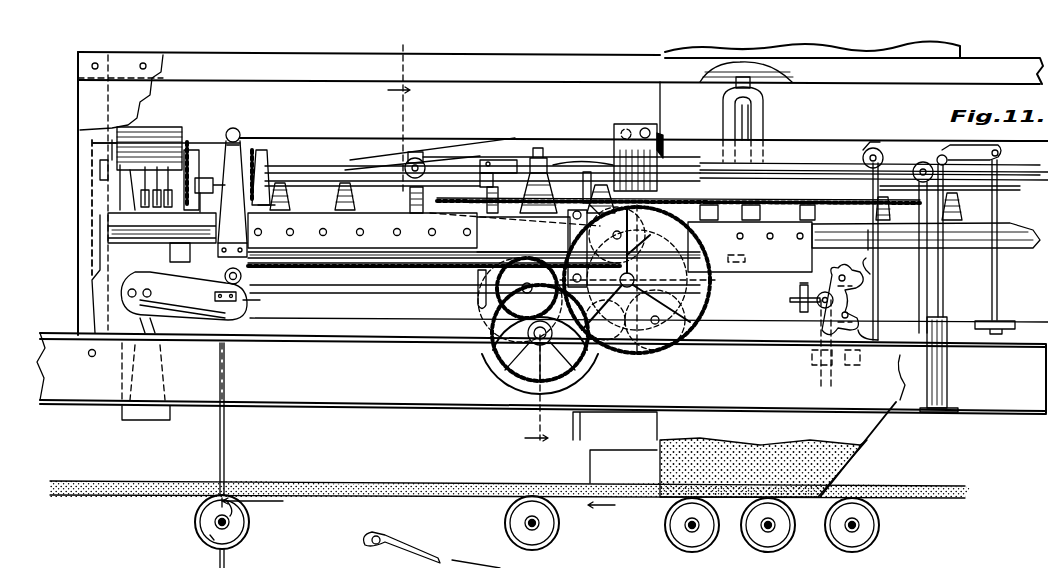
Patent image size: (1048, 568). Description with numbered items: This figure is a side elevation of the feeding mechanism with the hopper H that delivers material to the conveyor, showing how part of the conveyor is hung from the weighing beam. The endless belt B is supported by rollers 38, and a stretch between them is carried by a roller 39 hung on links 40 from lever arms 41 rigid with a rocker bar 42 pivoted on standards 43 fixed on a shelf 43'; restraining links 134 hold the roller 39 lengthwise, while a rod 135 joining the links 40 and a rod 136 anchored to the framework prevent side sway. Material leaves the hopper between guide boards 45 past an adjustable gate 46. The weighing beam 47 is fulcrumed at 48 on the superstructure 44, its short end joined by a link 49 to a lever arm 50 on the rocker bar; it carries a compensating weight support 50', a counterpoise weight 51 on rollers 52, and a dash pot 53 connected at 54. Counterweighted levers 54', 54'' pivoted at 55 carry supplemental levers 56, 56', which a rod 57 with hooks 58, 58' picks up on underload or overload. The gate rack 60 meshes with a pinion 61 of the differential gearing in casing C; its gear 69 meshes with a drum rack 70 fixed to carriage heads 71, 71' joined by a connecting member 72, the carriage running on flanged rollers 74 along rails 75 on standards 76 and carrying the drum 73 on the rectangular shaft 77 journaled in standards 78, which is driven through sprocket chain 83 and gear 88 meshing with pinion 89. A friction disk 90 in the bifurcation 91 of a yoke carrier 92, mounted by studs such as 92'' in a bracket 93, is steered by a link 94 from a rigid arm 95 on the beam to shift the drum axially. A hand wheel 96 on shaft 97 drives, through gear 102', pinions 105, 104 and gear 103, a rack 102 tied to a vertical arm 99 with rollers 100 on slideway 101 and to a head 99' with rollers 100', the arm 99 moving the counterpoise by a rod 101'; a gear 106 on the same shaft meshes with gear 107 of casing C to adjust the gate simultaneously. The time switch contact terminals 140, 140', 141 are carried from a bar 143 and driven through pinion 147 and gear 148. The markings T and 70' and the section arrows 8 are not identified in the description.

The table frame T is at (115, 141).
The contact terminal 141 is at (150, 130).
The gear 148 is at (194, 163).
The contact terminal 140 is at (182, 157).
The contact terminal 140' is at (161, 151).
The bar 143 is at (165, 222).
The pinion 147 is at (185, 225).
The vertical arm 99 is at (188, 226).
The flanged rollers 100 is at (235, 254).
The pinion 89 is at (248, 153).
The gear 88 is at (262, 180).
The standards 78 is at (262, 172).
The shaft 77 is at (340, 166).
The rails 75 is at (363, 180).
The drum 73 is at (448, 150).
The rod 101' is at (559, 134).
The carriage head 71 is at (397, 137).
The flanged rollers 74 is at (405, 162).
The connecting member 72 is at (485, 165).
The fulcrum 48 is at (538, 148).
The weighing beam 47 is at (592, 140).
The rollers 100' is at (500, 176).
The rollers 52 is at (645, 128).
The counterpoise weight 51 is at (664, 142).
The bracket 93 is at (725, 122).
The yoke shaped carrier 92 is at (765, 112).
The bifurcation 91 is at (762, 103).
The friction disk 90 is at (763, 130).
The carriage head 71' is at (910, 219).
The dash pot connection 54 is at (956, 217).
The standards 76 is at (286, 194).
The section line 8 is at (470, 249).
The slideway 101 is at (424, 230).
The rack 102 is at (358, 263).
The rigid arm 95 is at (540, 229).
The head 99' is at (570, 246).
The link 49 is at (477, 280).
The gear 103 is at (470, 290).
The lever arm 50 is at (407, 342).
The gear 69 is at (700, 320).
The link 94 is at (693, 262).
The gear 107 is at (700, 305).
The rack 60 is at (690, 336).
The pinion 61 is at (632, 348).
The gear 106 is at (680, 352).
The hand wheel 96 is at (570, 372).
The shaft 97 is at (558, 378).
The intermediate pinion 105 is at (497, 335).
The intermediate pinion 104 is at (488, 318).
The gear 102' is at (478, 374).
The casing C is at (750, 247).
The counterweighted lever 54' is at (802, 265).
The rack 70 is at (705, 212).
The stud 92'' is at (772, 212).
The pawl 70' is at (824, 212).
The superstructure 44 is at (1000, 232).
The rod 57 is at (878, 296).
The hook 58 is at (882, 265).
The hook 58' is at (883, 329).
The pivot 55 is at (795, 302).
The counterweighted lever 56 is at (841, 292).
The counterweighted lever 54'' is at (804, 345).
The counterweighted lever 56' is at (842, 367).
The compensating weight support 50' is at (1003, 307).
The dash pot 53 is at (953, 355).
The lever arms 41 is at (184, 296).
The rocker bar 42 is at (168, 292).
The standards 43 is at (121, 321).
The shelf 43' is at (146, 422).
The links 40 is at (226, 432).
The sprocket chain 83 is at (92, 233).
The restraining links 134 is at (282, 488).
The hopper H is at (665, 50).
The guide boards 45 is at (592, 450).
The adjustable gate 46 is at (658, 460).
The roller 39 is at (250, 520).
The endless belt B is at (325, 503).
The rollers 38 is at (560, 523).
The rod 136 is at (205, 567).
The rod 135 is at (232, 564).